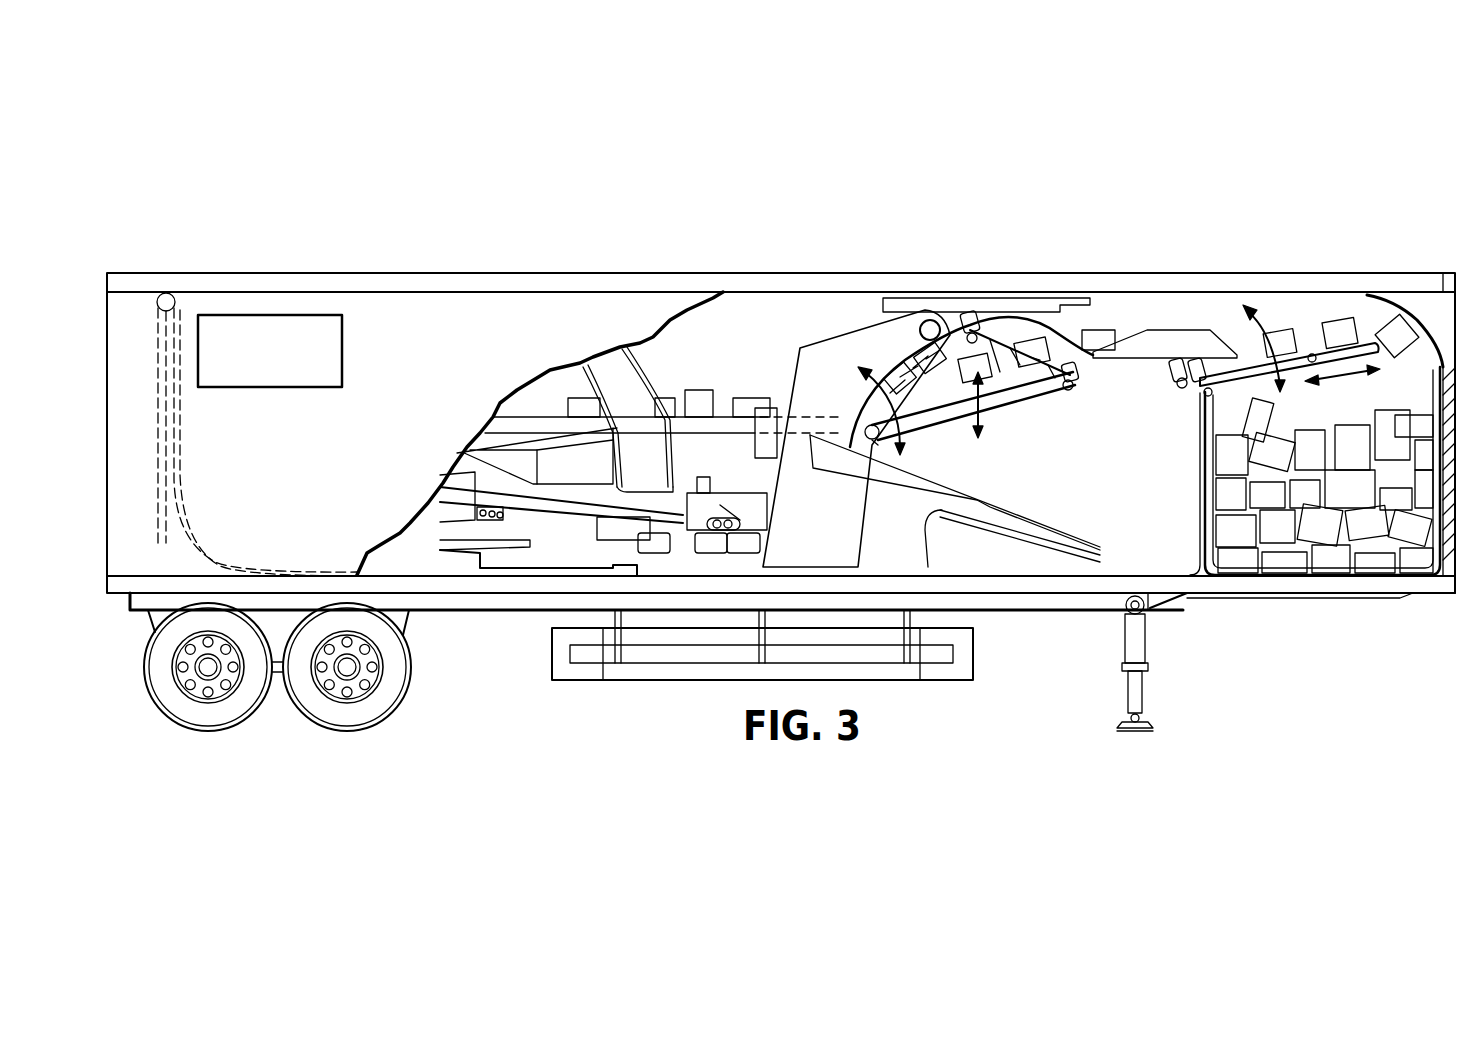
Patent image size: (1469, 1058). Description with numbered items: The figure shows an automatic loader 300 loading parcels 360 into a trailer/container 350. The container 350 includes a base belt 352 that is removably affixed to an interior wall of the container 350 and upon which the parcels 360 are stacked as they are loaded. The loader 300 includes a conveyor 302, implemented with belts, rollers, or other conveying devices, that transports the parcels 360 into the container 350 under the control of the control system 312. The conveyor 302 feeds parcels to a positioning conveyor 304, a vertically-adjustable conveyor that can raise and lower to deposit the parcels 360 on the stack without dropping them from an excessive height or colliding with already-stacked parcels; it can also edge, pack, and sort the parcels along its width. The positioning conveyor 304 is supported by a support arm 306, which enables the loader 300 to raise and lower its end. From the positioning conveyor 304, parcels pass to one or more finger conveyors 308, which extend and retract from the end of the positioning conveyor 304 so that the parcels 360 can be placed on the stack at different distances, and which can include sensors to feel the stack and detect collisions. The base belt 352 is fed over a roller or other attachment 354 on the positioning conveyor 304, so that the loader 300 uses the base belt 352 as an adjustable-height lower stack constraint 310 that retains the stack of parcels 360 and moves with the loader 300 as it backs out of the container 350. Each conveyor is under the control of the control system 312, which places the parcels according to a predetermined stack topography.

The trailer/container 350 is at (625, 273).
The control system 312 is at (343, 352).
The conveyor 302 is at (540, 413).
The loader 300 is at (778, 368).
The support arm 306 is at (842, 335).
The positioning conveyor 304 is at (1020, 397).
The roller or other attachment 354 is at (1192, 396).
The lower stack constraint 310 is at (1198, 470).
The finger conveyors 308 is at (1367, 340).
The parcels 360 is at (1275, 338).
The base belt 352 is at (1377, 578).